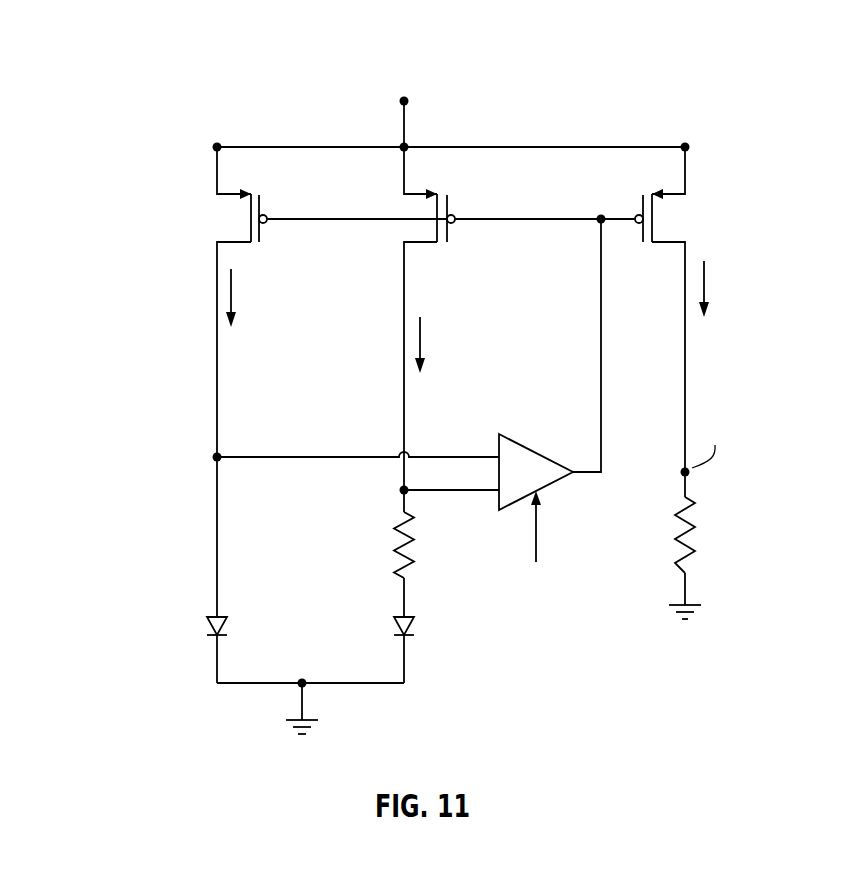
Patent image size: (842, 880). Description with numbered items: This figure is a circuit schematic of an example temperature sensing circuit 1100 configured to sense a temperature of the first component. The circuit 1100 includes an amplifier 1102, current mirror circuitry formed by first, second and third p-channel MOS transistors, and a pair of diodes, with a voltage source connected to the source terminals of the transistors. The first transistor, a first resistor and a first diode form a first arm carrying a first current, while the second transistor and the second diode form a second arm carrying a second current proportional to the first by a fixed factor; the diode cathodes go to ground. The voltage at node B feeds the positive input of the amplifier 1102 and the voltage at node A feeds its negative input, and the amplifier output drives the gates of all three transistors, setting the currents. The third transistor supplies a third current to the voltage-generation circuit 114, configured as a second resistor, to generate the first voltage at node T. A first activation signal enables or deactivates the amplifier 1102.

The temperature sensing circuit 1100 is at (152, 55).
The amplifier 1102 is at (537, 451).
The voltage-generation circuit 114 is at (773, 518).